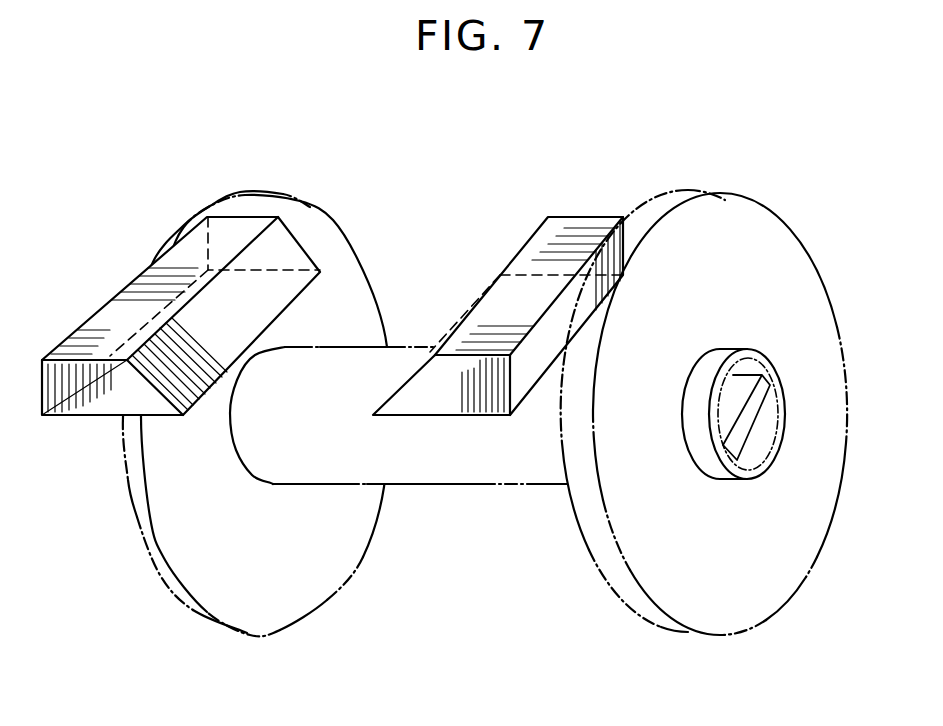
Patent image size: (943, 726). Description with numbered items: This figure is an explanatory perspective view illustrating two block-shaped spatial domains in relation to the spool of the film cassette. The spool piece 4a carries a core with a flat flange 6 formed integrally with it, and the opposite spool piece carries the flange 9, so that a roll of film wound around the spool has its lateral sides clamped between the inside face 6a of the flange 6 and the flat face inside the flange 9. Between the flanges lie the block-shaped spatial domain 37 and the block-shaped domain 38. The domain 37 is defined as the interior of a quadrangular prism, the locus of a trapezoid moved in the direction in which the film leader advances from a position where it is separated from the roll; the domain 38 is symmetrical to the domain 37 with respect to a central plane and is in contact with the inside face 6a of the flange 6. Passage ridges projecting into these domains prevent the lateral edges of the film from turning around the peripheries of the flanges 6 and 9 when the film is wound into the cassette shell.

The spool piece 4a is at (433, 487).
The flat flange 6 is at (360, 256).
The inside face 6a is at (314, 594).
The flange 9 is at (787, 227).
The block-shaped spatial domain 37 is at (578, 217).
The block-shaped domain 38 is at (150, 263).